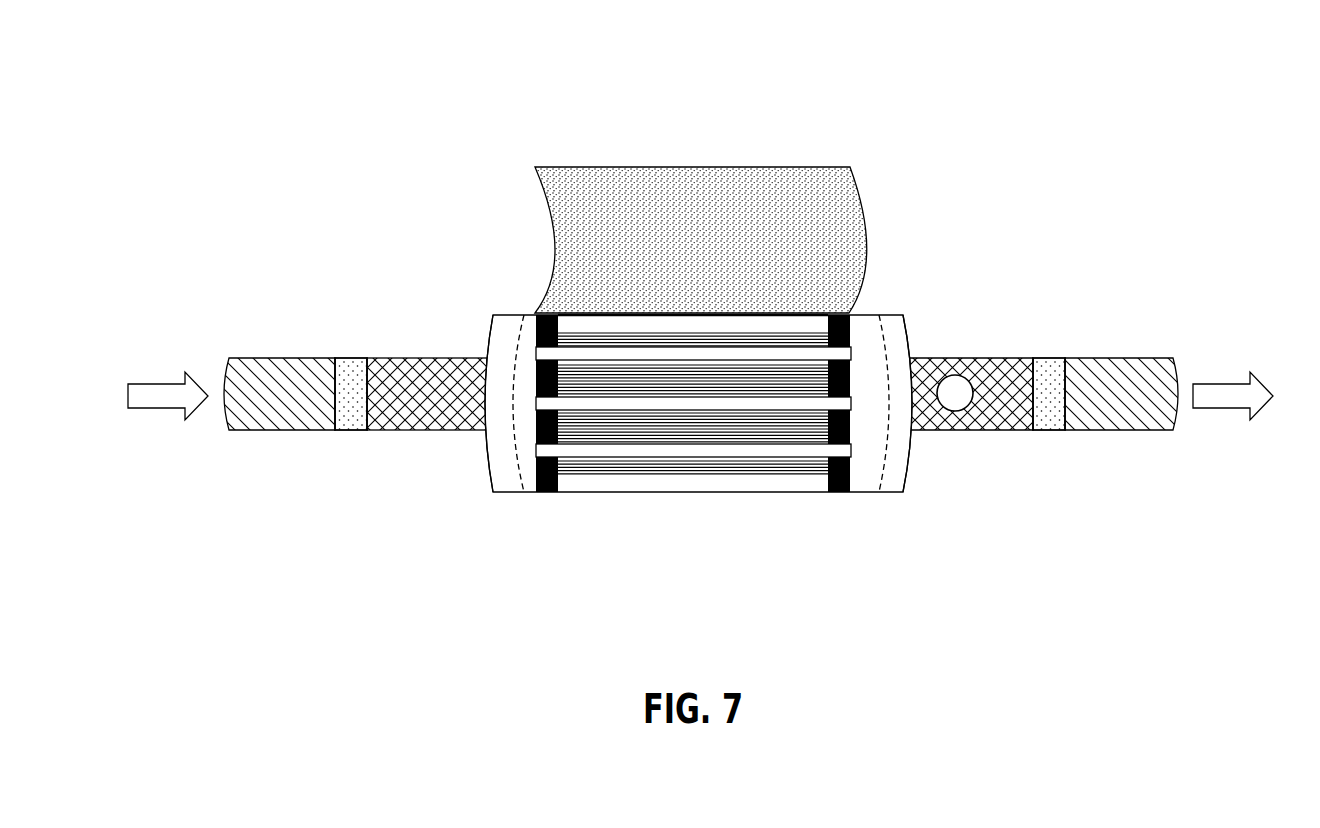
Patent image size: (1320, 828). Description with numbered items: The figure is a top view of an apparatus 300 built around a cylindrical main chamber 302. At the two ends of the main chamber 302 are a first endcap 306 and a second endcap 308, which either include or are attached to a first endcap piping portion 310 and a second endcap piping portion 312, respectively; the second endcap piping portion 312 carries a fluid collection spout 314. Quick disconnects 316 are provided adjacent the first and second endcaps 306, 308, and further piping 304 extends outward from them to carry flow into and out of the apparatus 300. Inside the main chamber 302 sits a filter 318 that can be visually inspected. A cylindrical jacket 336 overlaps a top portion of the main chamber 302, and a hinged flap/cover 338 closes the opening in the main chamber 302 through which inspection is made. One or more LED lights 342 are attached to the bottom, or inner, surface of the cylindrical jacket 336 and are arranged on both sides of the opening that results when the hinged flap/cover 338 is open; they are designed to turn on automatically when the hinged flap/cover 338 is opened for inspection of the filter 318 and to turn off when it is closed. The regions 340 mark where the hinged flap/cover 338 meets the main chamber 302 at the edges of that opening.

The apparatus 300 is at (702, 47).
The cylindrical main chamber 302 is at (698, 430).
The shaft / conduit 304 is at (283, 371).
The first endcap 306 is at (498, 481).
The second endcap 308 is at (888, 325).
The first endcap piping portion 310 is at (437, 371).
The second endcap piping portion 312 is at (1005, 369).
The fluid collection spout 314 is at (960, 403).
The quick disconnects 316 is at (350, 422).
The filter 318 is at (720, 410).
The cylindrical jacket 336 is at (520, 473).
The hinged flap/cover 338 is at (722, 230).
The joint region 340 is at (535, 312).
The LED lights 342 is at (547, 428).